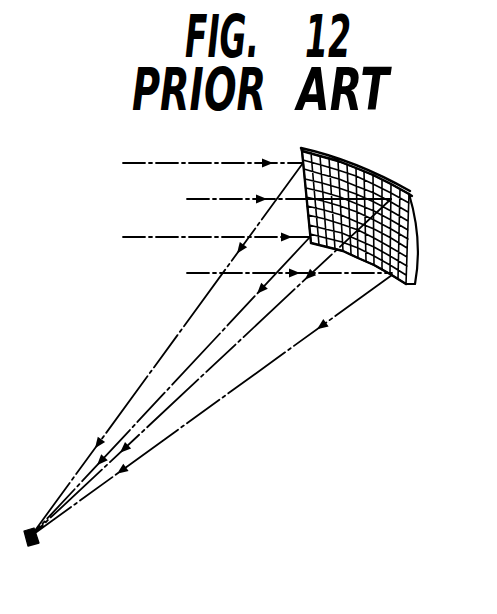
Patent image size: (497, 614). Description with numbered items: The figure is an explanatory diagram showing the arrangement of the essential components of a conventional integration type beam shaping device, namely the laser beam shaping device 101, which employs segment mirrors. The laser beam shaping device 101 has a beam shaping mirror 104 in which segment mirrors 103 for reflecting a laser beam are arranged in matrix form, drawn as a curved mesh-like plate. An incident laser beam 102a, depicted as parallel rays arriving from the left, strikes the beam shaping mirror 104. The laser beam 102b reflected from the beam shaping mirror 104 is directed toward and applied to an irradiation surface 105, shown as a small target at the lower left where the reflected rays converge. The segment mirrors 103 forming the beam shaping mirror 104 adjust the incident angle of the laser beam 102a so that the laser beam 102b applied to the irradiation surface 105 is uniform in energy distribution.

The laser beam shaping device 101 is at (394, 211).
The laser beam 102a is at (145, 239).
The laser beam 102b is at (282, 358).
The segment mirrors 103 is at (408, 264).
The beam shaping mirror 104 is at (413, 218).
The irradiation surface 105 is at (37, 545).